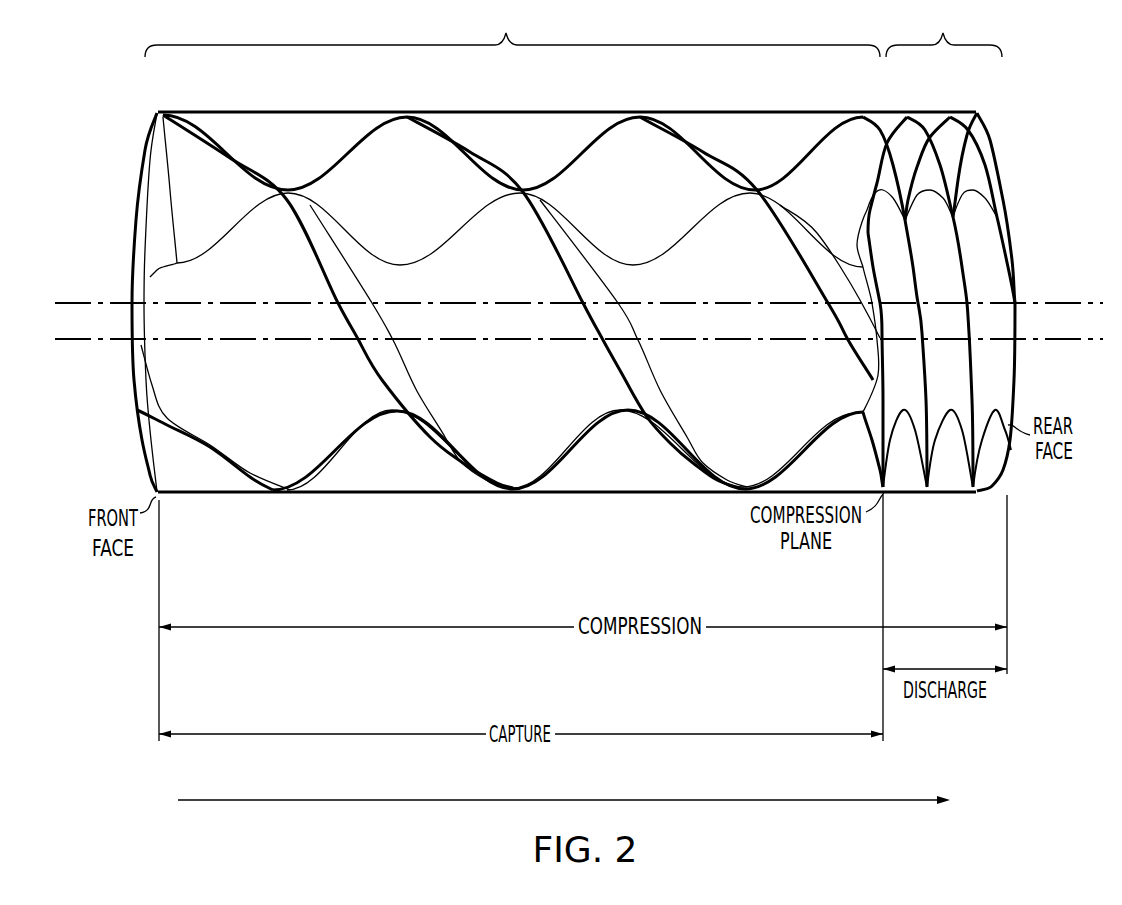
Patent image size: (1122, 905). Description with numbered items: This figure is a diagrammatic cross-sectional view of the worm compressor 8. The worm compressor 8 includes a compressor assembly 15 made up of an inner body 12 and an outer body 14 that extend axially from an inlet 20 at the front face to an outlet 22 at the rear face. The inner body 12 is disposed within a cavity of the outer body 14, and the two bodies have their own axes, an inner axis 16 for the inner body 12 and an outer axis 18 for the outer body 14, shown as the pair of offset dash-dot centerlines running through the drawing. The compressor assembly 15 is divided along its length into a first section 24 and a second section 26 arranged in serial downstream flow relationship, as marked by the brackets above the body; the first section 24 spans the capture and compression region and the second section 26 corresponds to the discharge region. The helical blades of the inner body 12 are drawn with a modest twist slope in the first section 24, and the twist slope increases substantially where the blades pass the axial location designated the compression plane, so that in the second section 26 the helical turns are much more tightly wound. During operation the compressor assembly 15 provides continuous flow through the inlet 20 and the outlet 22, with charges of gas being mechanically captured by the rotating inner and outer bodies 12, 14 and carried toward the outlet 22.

The worm compressor 8 is at (80, 461).
The inner body 12 is at (152, 327).
The outer body 14 is at (230, 112).
The compressor assembly 15 is at (182, 104).
The inner axis 16 is at (1065, 340).
The outer axis 18 is at (1086, 303).
The inlet 20 is at (157, 196).
The outlet 22 is at (996, 158).
The first section 24 is at (512, 30).
The second section 26 is at (944, 30).